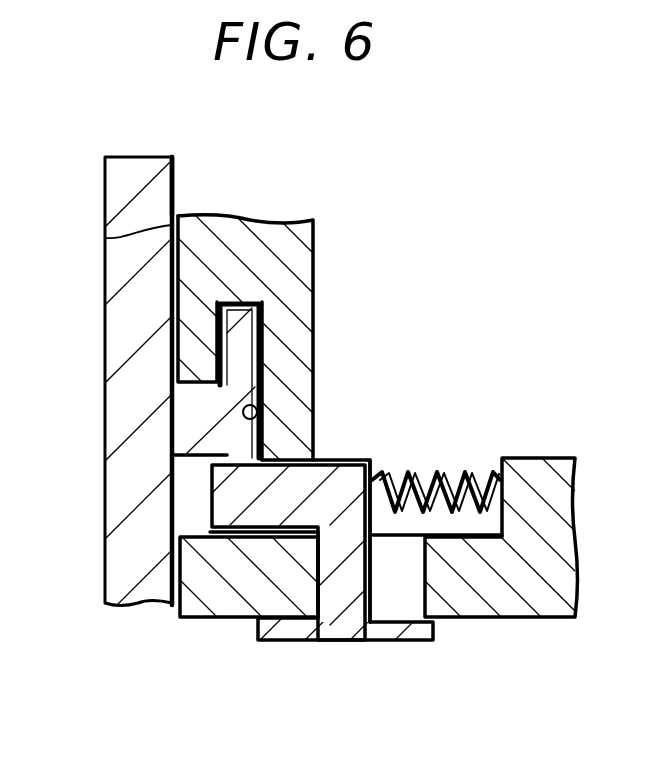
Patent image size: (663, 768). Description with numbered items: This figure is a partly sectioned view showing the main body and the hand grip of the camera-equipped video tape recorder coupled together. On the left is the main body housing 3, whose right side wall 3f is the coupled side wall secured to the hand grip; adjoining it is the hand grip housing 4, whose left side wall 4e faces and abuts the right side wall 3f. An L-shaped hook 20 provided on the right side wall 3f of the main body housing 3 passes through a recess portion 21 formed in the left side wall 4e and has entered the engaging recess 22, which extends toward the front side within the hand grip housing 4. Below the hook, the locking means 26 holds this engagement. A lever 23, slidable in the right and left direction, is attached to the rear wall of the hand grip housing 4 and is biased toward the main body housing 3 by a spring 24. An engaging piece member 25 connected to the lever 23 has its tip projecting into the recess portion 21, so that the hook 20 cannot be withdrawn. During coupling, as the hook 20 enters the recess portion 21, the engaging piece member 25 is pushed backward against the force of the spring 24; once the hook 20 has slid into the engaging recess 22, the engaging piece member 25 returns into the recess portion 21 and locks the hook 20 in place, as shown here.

The main body housing 3 is at (115, 322).
The right side wall 3f is at (172, 172).
The hand grip housing 4 is at (293, 230).
The left side wall 4e is at (105, 242).
The hook 20 is at (240, 342).
The recess portion 21 is at (258, 418).
The engaging recess 22 is at (248, 292).
The lever 23 is at (305, 642).
The spring 24 is at (450, 477).
The engaging piece member 25 is at (218, 492).
The locking means 26 is at (375, 455).